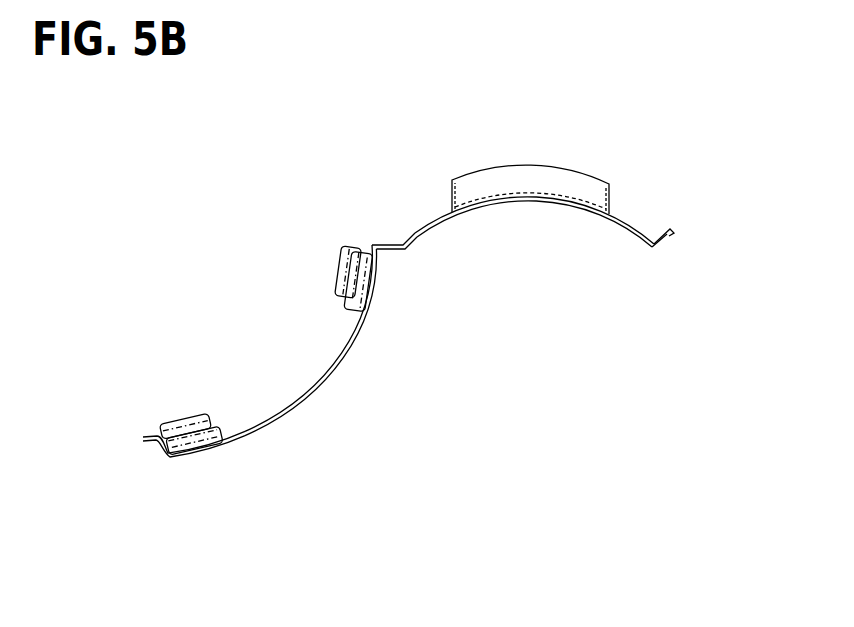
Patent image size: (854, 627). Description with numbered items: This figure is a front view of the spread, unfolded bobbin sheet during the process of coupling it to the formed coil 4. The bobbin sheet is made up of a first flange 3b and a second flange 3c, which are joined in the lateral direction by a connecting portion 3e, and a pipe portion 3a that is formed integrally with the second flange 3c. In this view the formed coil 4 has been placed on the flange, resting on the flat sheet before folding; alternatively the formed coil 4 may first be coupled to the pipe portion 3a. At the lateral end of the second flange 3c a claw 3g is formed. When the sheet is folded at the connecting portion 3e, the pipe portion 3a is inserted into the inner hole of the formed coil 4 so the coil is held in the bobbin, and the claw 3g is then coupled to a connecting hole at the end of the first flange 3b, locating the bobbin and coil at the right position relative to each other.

The pipe portion 3a is at (612, 196).
The first flange 3b is at (229, 438).
The second flange 3c is at (635, 228).
The connecting portion 3e is at (392, 248).
The claw 3g is at (673, 235).
The formed coil 4 is at (185, 422).